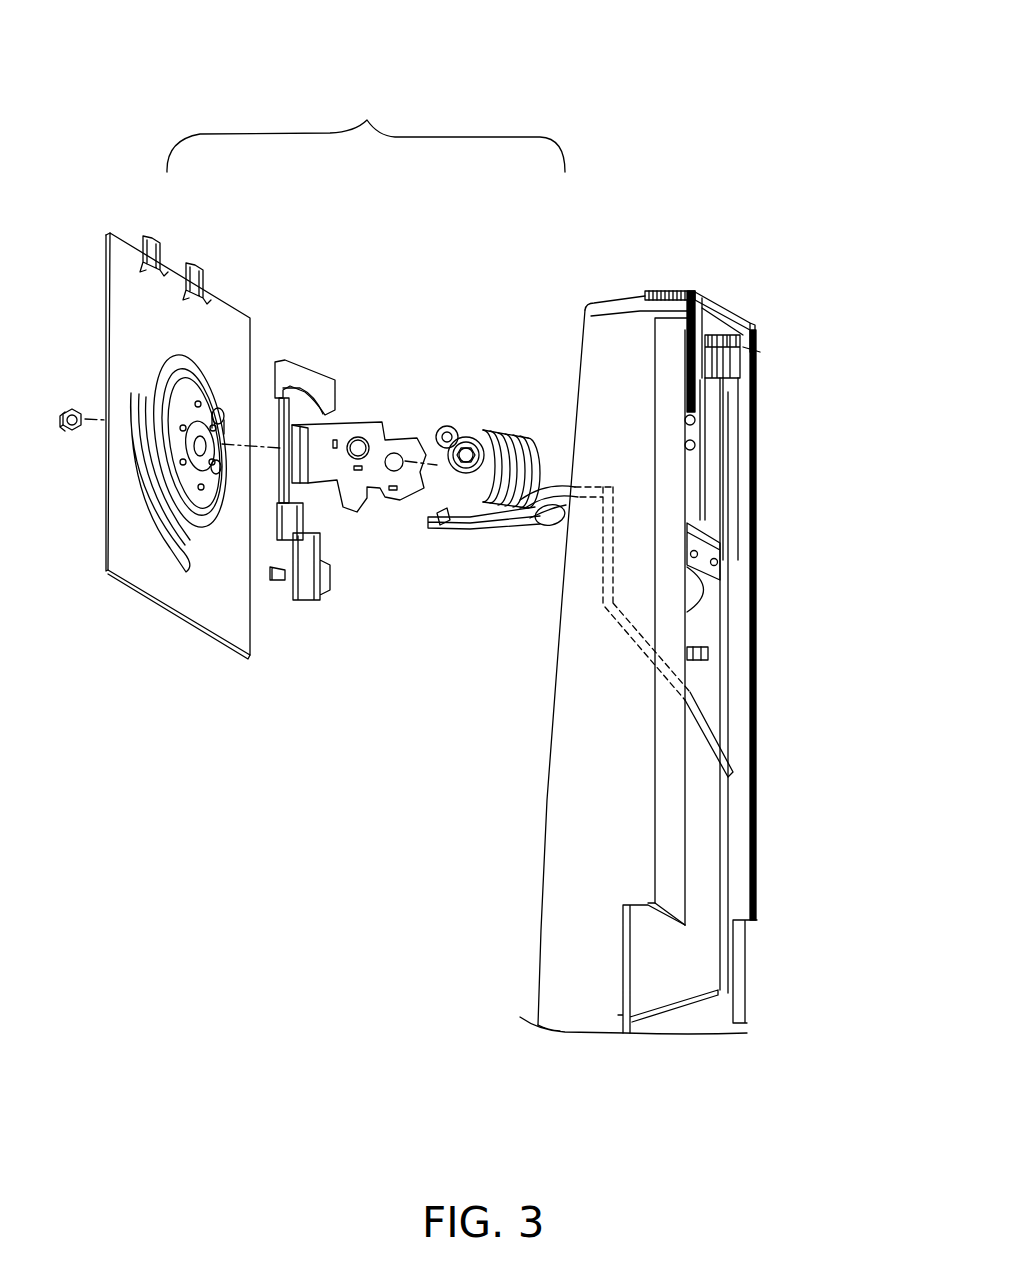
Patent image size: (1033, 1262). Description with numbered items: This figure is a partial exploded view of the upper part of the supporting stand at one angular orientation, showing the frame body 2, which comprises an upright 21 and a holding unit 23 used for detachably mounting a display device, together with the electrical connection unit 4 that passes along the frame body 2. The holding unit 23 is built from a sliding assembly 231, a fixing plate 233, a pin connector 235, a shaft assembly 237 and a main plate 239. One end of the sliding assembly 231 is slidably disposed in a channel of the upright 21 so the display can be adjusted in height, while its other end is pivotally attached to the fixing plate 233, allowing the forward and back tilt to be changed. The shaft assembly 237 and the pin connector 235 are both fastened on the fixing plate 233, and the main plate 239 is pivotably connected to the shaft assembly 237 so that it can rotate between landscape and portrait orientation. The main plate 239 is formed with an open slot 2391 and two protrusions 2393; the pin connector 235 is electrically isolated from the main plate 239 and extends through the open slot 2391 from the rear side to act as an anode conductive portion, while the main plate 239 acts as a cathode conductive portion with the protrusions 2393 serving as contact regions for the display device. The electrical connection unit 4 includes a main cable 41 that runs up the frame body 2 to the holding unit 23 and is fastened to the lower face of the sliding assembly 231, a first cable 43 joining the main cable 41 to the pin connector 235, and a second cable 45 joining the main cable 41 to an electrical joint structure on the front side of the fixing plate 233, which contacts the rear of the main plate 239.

The frame body 2 is at (548, 737).
The upright 21 is at (555, 877).
The holding unit 23 is at (366, 125).
The sliding assembly 231 is at (468, 420).
The fixing plate 233 is at (313, 382).
The pin connector 235 is at (272, 578).
The shaft assembly 237 is at (73, 407).
The main plate 239 is at (210, 607).
The open slot 2391 is at (173, 537).
The protrusions 2393 is at (198, 272).
The electrical connection unit 4 is at (600, 584).
The main cable 41 is at (485, 520).
The first cable 43 is at (440, 520).
The second cable 45 is at (437, 530).